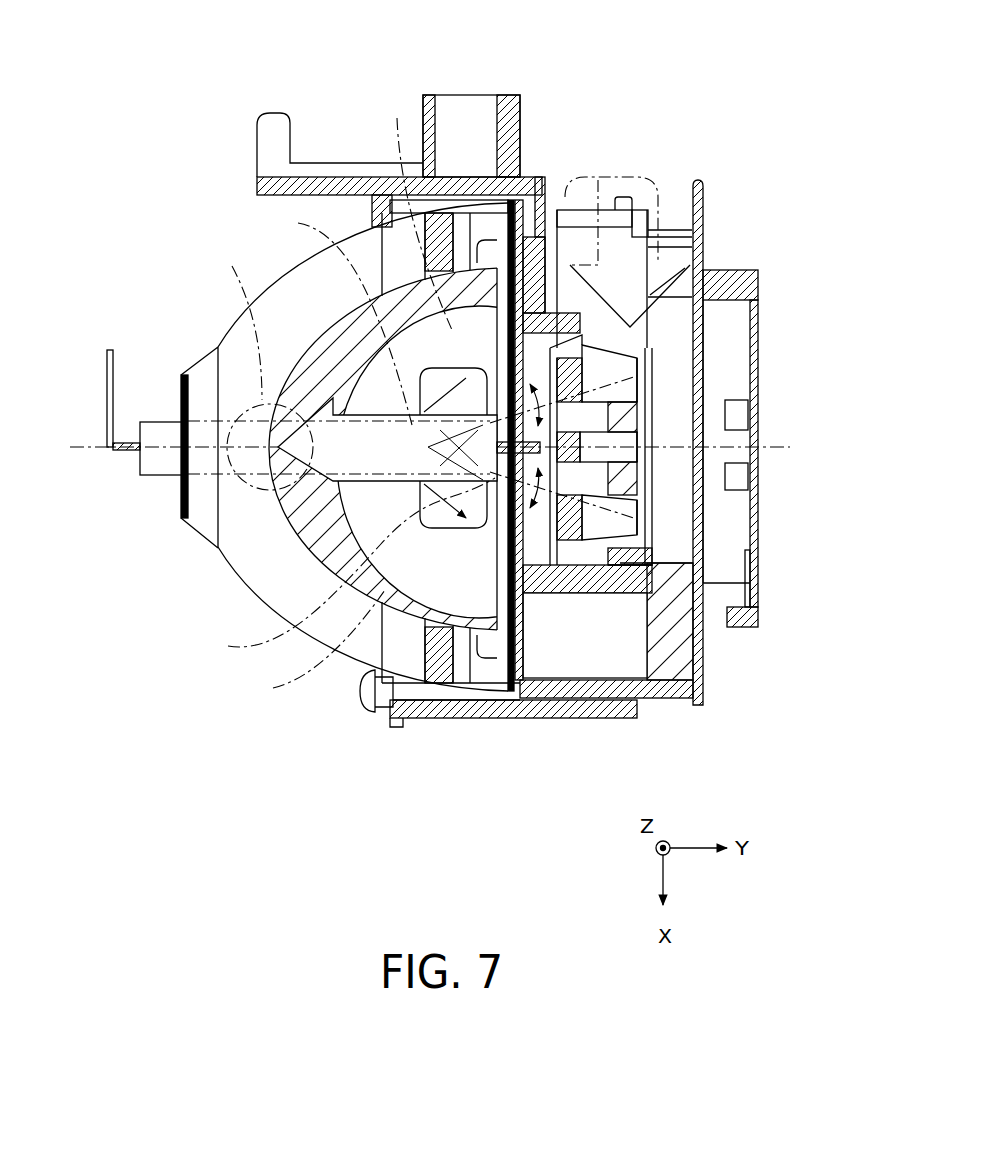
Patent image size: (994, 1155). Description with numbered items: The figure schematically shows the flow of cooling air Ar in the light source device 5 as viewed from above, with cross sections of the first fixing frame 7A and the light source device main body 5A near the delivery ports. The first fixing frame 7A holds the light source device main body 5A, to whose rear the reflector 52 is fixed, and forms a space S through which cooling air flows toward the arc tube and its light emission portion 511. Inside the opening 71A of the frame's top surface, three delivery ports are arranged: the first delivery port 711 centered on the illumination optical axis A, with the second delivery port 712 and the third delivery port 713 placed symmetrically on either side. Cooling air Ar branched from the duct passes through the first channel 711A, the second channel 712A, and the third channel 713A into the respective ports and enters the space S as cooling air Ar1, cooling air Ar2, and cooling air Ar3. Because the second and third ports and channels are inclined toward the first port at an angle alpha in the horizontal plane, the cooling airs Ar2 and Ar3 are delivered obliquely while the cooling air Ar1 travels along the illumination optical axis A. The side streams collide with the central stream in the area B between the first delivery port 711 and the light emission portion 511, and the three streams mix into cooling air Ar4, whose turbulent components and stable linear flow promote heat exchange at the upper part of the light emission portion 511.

The light source device 5 is at (602, 65).
The light source device main body 5A is at (200, 535).
The illumination optical axis A is at (79, 443).
The light emission portion 511 is at (258, 398).
The reflector 52 is at (243, 566).
The area B is at (351, 568).
The cooling air Ar3 is at (308, 647).
The cooling air Ar4 is at (256, 364).
The cooling air Ar1 is at (332, 317).
The cooling air Ar2 is at (410, 208).
The space S is at (468, 338).
The cooling air Ar is at (658, 190).
The first fixing frame 7A is at (705, 186).
The opening 71A is at (680, 333).
The second delivery port 712 is at (640, 386).
The second channel 712A is at (642, 372).
The first delivery port 711 is at (663, 437).
The first channel 711A is at (645, 458).
The third delivery port 713 is at (640, 512).
The third channel 713A is at (645, 530).